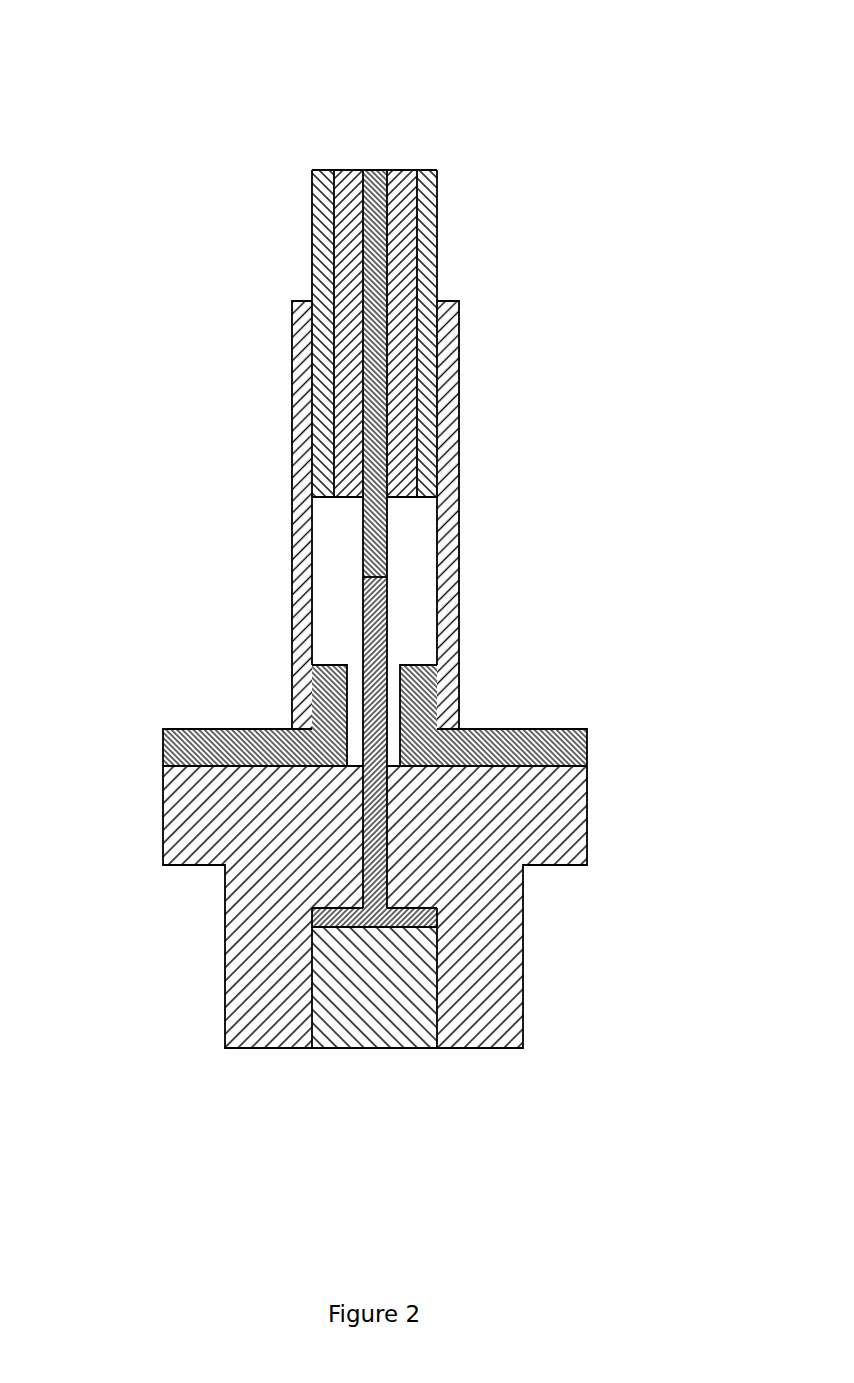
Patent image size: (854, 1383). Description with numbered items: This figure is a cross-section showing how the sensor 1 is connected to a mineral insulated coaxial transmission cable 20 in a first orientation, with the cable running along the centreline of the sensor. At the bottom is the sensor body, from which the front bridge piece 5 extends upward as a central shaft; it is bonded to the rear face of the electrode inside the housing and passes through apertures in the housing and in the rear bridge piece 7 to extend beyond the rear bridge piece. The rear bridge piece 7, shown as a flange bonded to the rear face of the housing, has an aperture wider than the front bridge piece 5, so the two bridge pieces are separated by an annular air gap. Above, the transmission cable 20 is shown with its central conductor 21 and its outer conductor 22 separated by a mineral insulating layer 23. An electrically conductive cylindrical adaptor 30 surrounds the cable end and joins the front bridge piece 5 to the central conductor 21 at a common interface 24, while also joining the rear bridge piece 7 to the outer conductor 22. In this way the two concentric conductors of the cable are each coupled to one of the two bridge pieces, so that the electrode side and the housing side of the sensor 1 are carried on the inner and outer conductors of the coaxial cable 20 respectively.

The sensor 1 is at (606, 766).
The front bridge piece 5 is at (372, 608).
The rear bridge piece 7 is at (542, 747).
The mineral insulated coaxial transmission cable 20 is at (447, 145).
The central conductor 21 is at (372, 521).
The outer conductor 22 is at (428, 218).
The mineral insulating layer 23 is at (345, 237).
The common interface 24 is at (401, 577).
The electrically conductive cylindrical adaptor 30 is at (447, 398).